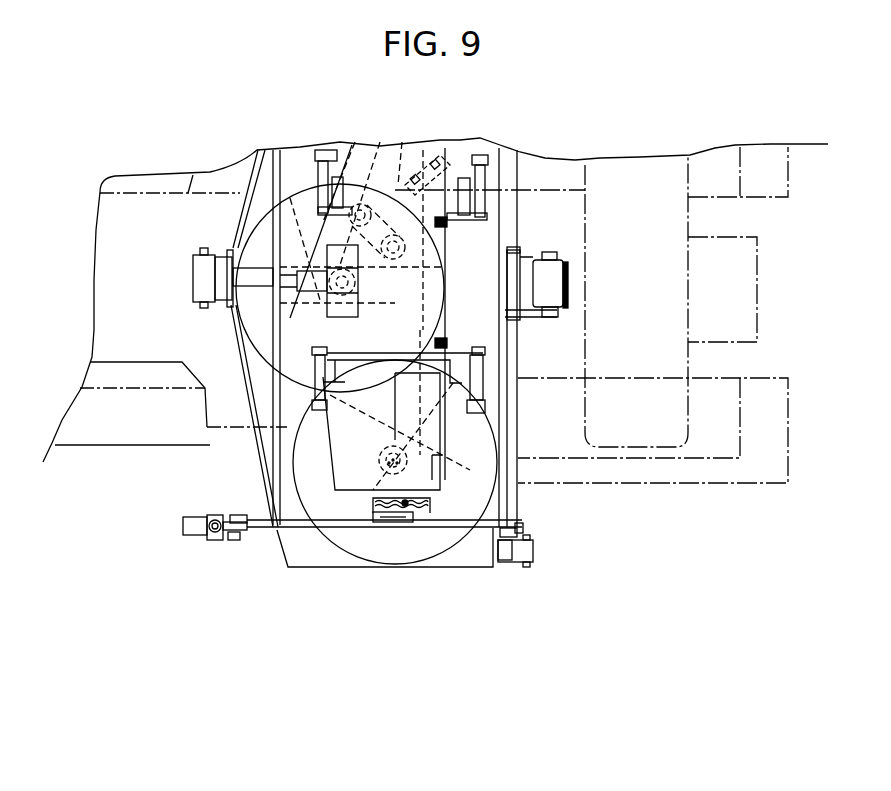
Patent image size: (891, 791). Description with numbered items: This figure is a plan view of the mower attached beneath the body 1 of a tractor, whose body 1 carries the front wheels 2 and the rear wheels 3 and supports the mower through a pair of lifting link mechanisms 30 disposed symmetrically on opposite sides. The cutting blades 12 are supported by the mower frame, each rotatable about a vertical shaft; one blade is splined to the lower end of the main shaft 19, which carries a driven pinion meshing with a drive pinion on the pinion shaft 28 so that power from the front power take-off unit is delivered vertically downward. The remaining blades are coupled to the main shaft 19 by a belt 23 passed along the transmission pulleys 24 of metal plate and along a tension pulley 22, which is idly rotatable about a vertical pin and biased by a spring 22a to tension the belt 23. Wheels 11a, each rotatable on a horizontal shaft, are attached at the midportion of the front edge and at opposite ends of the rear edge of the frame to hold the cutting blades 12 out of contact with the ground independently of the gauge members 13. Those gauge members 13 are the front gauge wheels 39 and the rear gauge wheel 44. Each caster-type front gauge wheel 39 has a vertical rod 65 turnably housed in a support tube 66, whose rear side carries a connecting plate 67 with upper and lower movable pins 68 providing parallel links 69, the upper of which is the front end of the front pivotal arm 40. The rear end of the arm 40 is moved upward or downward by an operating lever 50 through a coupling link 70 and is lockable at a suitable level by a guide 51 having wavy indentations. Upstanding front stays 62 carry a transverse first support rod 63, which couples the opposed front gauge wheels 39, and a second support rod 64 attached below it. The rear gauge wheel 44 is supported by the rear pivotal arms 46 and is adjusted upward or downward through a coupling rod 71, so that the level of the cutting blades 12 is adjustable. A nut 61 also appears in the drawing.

The body 1 is at (178, 363).
The front wheels 2 is at (103, 433).
The rear wheels 3 is at (610, 485).
The wheels 11a is at (193, 265).
The cutting blades 12 is at (311, 193).
The gauge members 13 is at (570, 270).
The main shaft 19 is at (350, 317).
The tension pulley 22 is at (445, 265).
The spring 22a is at (417, 150).
The belt 23 is at (385, 383).
The transmission pulley 24 is at (355, 286).
The pinion shaft 28 is at (292, 292).
The lifting link mechanisms 30 is at (487, 187).
The front gauge wheels 39 is at (192, 533).
The front pivotal arm 40 is at (299, 503).
The rear gauge wheel 44 is at (568, 287).
The rear pivotal arms 46 is at (487, 528).
The operating lever 50 is at (430, 508).
The guide 51 is at (395, 497).
The nut 61 is at (447, 224).
The front stays 62 is at (288, 524).
The first support rod 63 is at (268, 448).
The second support rod 64 is at (272, 530).
The vertical rod 65 is at (215, 532).
The support tube 66 is at (213, 518).
The connecting plate 67 is at (232, 540).
The movable pins 68 is at (237, 515).
The parallel links 69 is at (263, 530).
The coupling link 70 is at (392, 522).
The coupling rod 71 is at (518, 440).